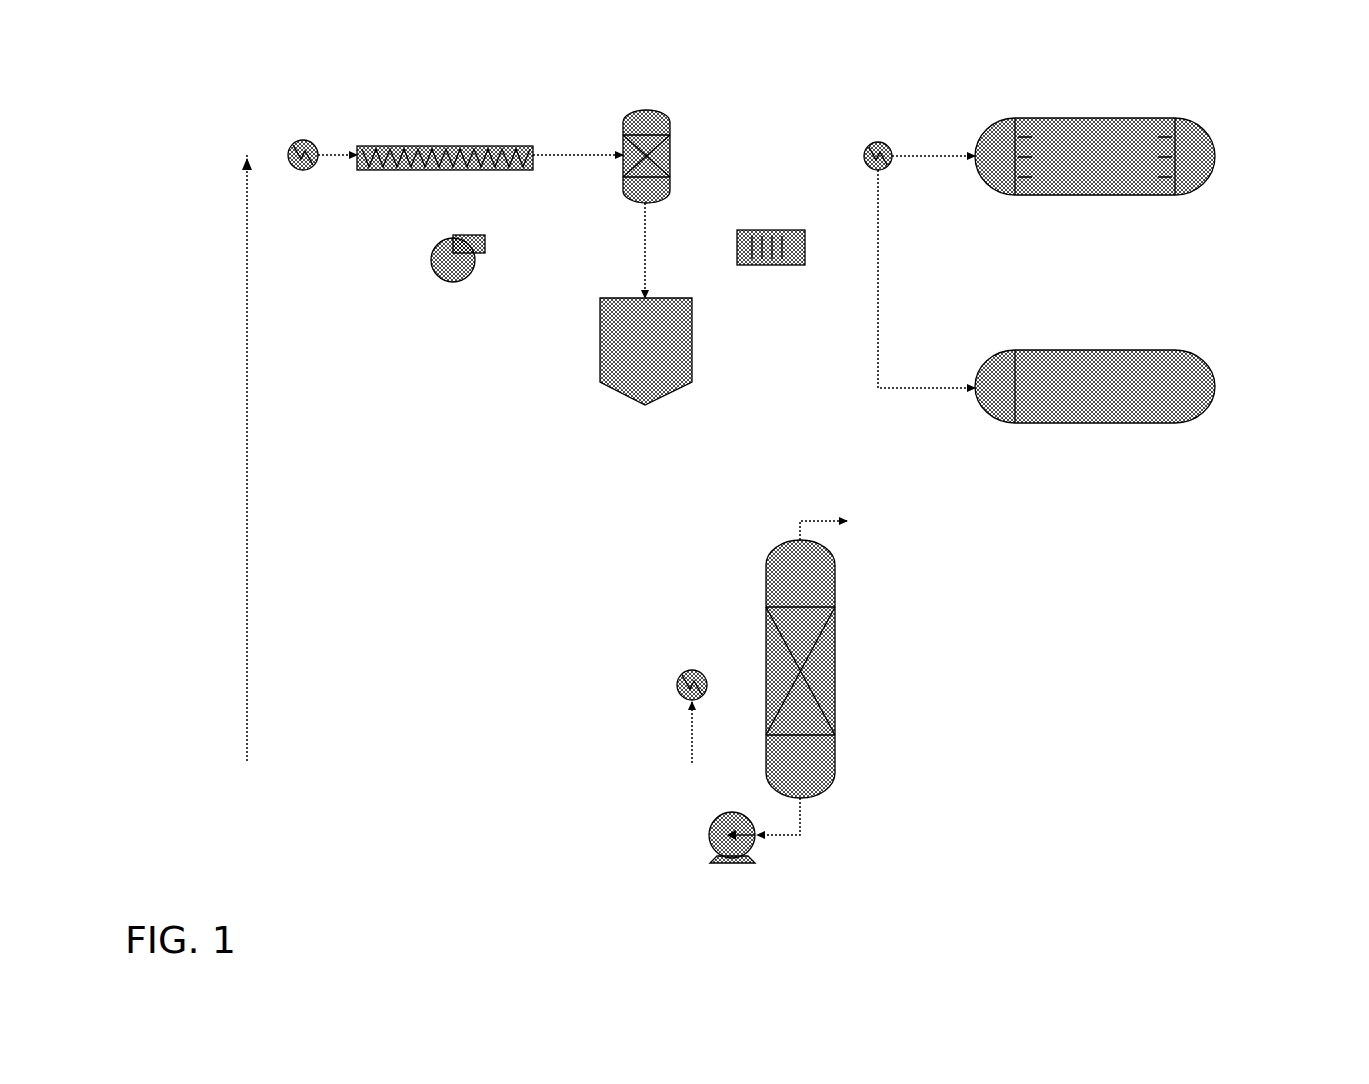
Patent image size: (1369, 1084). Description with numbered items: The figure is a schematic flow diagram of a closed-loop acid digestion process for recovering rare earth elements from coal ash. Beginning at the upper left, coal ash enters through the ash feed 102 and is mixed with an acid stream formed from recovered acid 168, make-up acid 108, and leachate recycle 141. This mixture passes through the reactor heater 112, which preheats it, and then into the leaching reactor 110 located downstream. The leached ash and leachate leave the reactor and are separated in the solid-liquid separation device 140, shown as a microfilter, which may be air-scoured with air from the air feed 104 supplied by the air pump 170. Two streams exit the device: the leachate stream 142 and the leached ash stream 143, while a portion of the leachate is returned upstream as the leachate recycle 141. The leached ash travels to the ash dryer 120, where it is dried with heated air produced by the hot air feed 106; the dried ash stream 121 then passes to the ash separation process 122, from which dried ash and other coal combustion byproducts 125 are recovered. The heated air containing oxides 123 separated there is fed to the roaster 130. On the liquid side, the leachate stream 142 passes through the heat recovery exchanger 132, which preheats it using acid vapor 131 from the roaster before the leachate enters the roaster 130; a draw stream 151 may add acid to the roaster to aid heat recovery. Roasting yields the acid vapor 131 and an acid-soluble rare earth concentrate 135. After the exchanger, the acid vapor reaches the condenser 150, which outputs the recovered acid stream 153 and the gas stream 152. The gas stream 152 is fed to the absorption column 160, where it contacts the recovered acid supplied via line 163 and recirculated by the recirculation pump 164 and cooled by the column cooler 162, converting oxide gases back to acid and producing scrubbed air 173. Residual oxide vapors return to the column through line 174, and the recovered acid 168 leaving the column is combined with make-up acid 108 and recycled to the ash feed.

The ash feed 102 is at (288, 155).
The air feed 104 is at (431, 258).
The hot air feed 106 is at (645, 410).
The make-up acid 108 is at (247, 576).
The leaching reactor 110 is at (486, 188).
The reactor heater 112 is at (307, 199).
The ash dryer 120 is at (646, 304).
The dried ash stream 121 is at (737, 247).
The ash separation process 122 is at (760, 235).
The heated air containing oxides 123 is at (805, 247).
The coal combustion byproducts 125 is at (770, 265).
The roaster 130 is at (1095, 156).
The acid vapor 131 is at (1215, 157).
The heat recovery exchanger 132 is at (857, 152).
The acid-soluble rare earth concentrate 135 is at (1173, 195).
The solid-liquid separation device 140 is at (599, 146).
The leachate recycle 141 is at (690, 155).
The leachate stream 142 is at (864, 155).
The leached ash stream 143 is at (623, 178).
The condenser 150 is at (1095, 386).
The draw stream 151 is at (1096, 350).
The gas stream 152 is at (835, 771).
The recovered acid stream 153 is at (1096, 423).
The absorption column 160 is at (864, 659).
The column cooler 162 is at (642, 705).
The acid recycle line 163 is at (765, 599).
The recirculation pump 164 is at (705, 857).
The recovered acid 168 is at (712, 811).
The air pump 170 is at (450, 286).
The scrubbed air 173 is at (847, 521).
The oxide vapor recycle line 174 is at (998, 771).